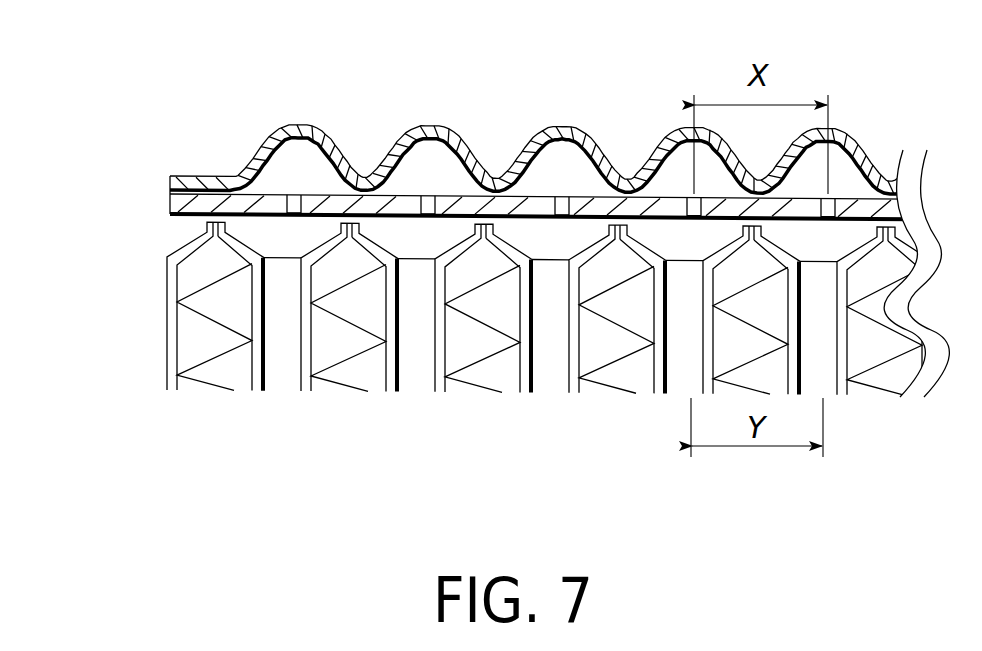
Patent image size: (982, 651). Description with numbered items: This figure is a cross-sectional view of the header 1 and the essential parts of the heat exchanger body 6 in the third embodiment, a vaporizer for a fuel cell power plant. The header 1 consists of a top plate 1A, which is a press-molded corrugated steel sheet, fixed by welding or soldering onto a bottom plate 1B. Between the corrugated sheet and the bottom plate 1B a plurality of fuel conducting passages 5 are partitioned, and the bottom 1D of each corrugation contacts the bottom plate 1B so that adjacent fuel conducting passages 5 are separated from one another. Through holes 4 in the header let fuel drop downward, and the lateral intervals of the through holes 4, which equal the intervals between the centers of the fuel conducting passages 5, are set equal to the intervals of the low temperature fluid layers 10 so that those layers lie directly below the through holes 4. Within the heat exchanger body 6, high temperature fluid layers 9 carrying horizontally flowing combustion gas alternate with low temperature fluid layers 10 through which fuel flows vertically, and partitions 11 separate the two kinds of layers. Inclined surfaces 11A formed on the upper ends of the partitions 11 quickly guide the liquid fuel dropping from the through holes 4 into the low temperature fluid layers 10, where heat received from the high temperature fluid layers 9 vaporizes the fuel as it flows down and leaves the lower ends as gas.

The header 1 is at (539, 123).
The top plate 1A is at (417, 125).
The bottom plate 1B is at (277, 191).
The bottom of the corrugation 1D is at (360, 183).
The through holes 4 is at (561, 197).
The fuel conducting passages 5 is at (672, 172).
The heat exchanger body 6 is at (481, 286).
The high temperature fluid layers 9 is at (353, 392).
The low temperature fluid layers 10 is at (282, 382).
The partitions 11 is at (252, 370).
The inclined surfaces 11A is at (238, 245).